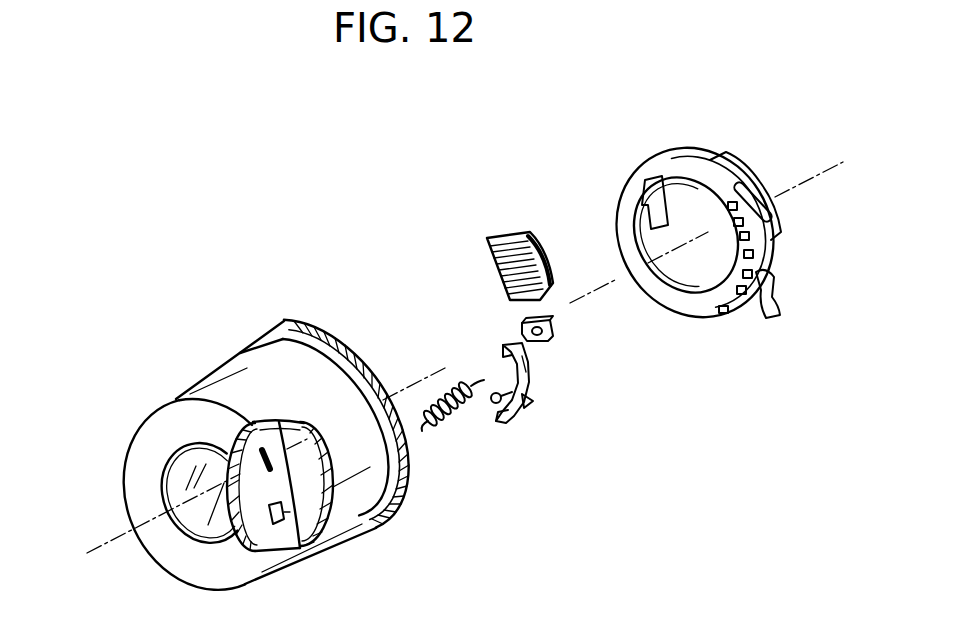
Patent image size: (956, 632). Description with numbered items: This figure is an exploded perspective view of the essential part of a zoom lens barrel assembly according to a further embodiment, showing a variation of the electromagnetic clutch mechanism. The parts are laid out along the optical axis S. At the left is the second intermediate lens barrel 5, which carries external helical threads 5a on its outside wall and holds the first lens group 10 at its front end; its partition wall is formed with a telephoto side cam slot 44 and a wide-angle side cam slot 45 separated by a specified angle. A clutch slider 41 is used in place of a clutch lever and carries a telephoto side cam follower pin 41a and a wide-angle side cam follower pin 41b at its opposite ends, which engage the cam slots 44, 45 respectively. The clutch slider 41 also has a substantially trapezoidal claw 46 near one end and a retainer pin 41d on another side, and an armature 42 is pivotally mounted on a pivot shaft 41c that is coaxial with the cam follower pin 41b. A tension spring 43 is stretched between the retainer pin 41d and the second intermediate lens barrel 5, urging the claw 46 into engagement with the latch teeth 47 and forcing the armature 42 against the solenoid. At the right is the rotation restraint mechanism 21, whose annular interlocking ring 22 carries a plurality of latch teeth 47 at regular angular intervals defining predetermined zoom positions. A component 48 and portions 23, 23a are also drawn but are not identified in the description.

The second intermediate lens barrel 5 is at (197, 562).
The external helical threads 5a is at (325, 336).
The first lens group 10 is at (172, 480).
The optical axis S is at (103, 548).
The wide-angle side cam slot 45 is at (278, 428).
The telephoto side cam slot 44 is at (283, 519).
The tension spring 43 is at (443, 427).
The clutch slider 41 is at (520, 391).
The telephoto side cam follower pin 41a is at (502, 430).
The wide-angle side cam follower pin 41b is at (503, 356).
The pivot shaft 41c is at (534, 370).
The retainer pin 41d is at (484, 345).
The trapezoidal claw 46 is at (535, 402).
The armature 42 is at (555, 334).
The rack segment 48 is at (512, 232).
The rotation restraint mechanism 21 is at (660, 136).
The interlocking ring 22 is at (663, 300).
The tab 23 is at (737, 158).
The slot in tab 23a is at (777, 192).
The latch teeth 47 is at (762, 294).